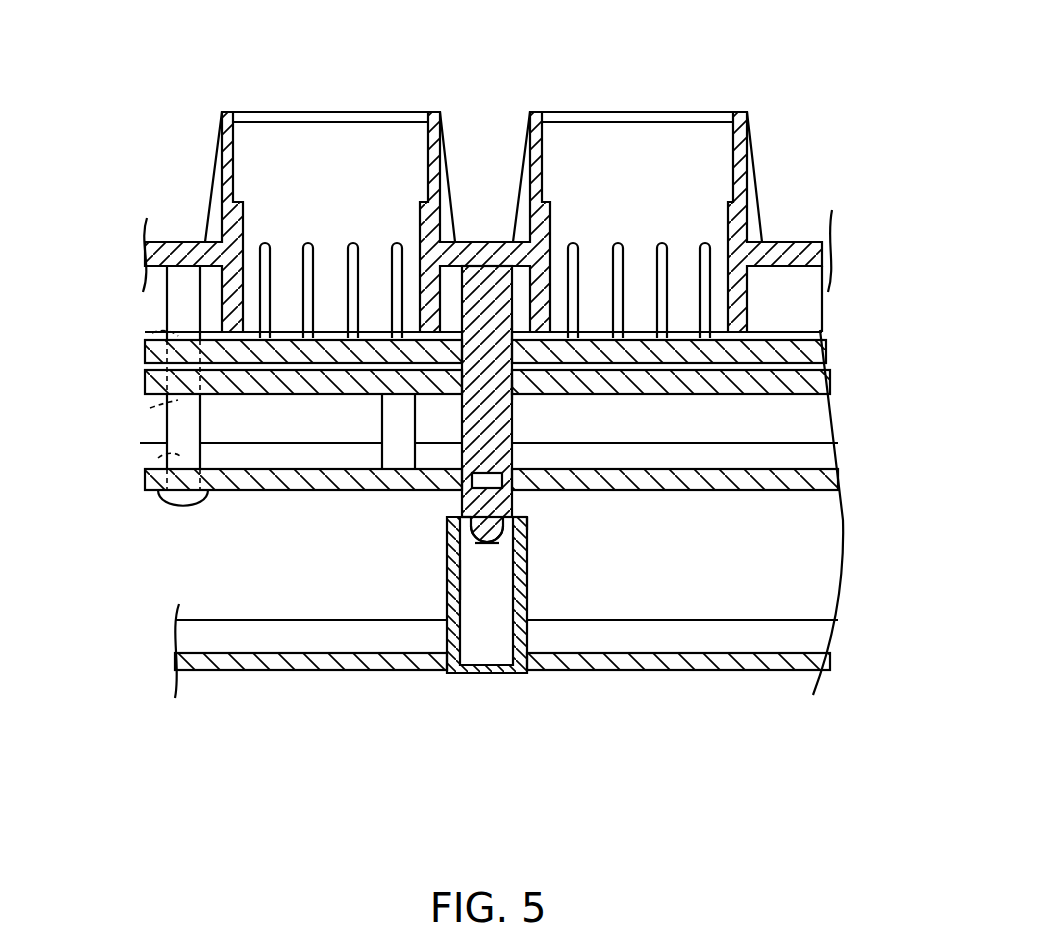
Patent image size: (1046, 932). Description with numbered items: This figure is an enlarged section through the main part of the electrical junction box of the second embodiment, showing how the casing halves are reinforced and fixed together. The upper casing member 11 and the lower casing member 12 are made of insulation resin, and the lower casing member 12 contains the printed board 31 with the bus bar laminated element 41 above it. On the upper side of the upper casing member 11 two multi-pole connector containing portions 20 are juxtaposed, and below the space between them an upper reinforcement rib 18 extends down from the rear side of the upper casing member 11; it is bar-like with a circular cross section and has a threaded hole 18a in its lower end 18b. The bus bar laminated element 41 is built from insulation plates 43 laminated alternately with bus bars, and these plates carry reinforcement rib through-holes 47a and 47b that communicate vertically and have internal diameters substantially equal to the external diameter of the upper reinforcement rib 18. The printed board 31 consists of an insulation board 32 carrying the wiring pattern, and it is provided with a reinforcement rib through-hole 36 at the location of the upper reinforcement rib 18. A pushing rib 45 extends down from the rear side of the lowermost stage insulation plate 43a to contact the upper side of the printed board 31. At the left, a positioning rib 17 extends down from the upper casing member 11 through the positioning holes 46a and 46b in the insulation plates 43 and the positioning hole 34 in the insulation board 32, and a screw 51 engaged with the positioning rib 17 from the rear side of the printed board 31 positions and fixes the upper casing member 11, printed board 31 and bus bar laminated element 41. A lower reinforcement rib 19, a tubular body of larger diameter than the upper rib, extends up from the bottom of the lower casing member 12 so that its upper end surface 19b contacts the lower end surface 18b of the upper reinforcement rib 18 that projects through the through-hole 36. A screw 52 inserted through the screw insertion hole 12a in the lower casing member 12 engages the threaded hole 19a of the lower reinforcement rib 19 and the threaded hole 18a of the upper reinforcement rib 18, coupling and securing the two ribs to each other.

The upper casing member 11 is at (793, 252).
The lower casing member 12 is at (729, 663).
The screw insertion hole 12a is at (476, 673).
The positioning rib 17 is at (167, 300).
The upper reinforcement rib 18 is at (461, 418).
The threaded hole 18a is at (462, 518).
The lower end surface 18b is at (477, 540).
The lower reinforcement rib 19 is at (528, 518).
The threaded hole 19a is at (452, 580).
The upper end surface 19b is at (508, 527).
The multi-pole connector containing portion 20 is at (364, 110).
The printed board 31 is at (811, 491).
The insulation board 32 is at (810, 479).
The positioning hole 34 is at (158, 458).
The reinforcement rib through-hole 36 is at (535, 512).
The bus bar laminated element 41 is at (550, 351).
The insulation plate 43 is at (797, 346).
The lowermost stage insulation plate 43a is at (805, 381).
The pushing rib 45 is at (381, 413).
The positioning hole 46a is at (150, 408).
The positioning hole 46b is at (152, 333).
The reinforcement rib through-hole 47a is at (500, 330).
The reinforcement rib through-hole 47b is at (510, 390).
The screw 51 is at (164, 508).
The screw 52 is at (487, 548).